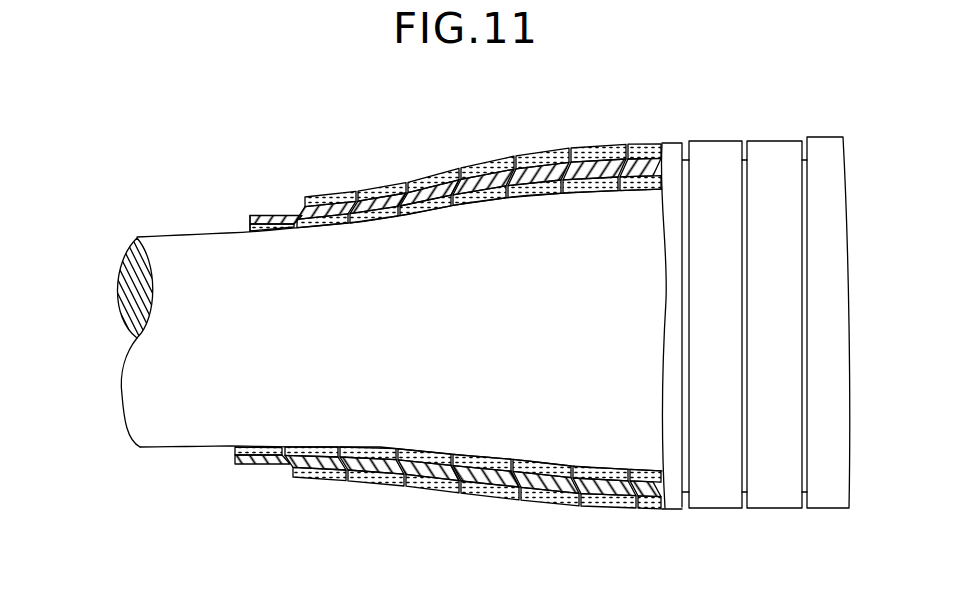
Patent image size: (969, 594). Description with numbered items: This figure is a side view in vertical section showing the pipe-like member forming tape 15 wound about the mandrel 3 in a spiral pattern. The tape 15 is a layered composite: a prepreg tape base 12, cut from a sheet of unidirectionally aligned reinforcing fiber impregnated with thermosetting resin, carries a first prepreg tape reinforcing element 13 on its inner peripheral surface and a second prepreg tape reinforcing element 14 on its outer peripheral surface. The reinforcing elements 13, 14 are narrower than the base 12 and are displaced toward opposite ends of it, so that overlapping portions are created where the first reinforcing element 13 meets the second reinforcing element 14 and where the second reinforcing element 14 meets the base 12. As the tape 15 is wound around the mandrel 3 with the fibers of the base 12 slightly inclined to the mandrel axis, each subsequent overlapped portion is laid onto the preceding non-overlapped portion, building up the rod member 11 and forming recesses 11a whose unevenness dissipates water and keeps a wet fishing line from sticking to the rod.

The mandrel 3 is at (188, 236).
The rod member 11 is at (480, 148).
The recesses 11a is at (458, 168).
The prepreg tape base 12 is at (291, 216).
The first prepreg tape reinforcing element 13 is at (281, 233).
The second prepreg tape reinforcing element 14 is at (328, 192).
The pipe-like member forming tape 15 is at (257, 214).